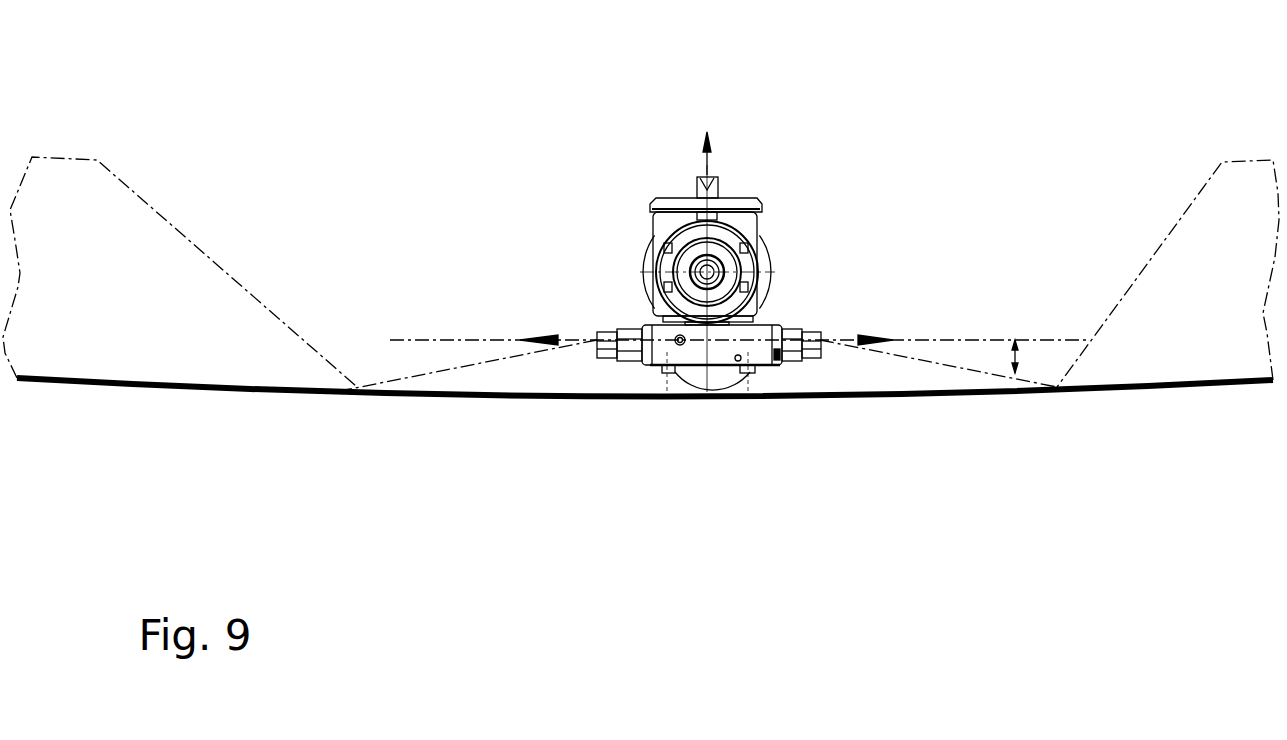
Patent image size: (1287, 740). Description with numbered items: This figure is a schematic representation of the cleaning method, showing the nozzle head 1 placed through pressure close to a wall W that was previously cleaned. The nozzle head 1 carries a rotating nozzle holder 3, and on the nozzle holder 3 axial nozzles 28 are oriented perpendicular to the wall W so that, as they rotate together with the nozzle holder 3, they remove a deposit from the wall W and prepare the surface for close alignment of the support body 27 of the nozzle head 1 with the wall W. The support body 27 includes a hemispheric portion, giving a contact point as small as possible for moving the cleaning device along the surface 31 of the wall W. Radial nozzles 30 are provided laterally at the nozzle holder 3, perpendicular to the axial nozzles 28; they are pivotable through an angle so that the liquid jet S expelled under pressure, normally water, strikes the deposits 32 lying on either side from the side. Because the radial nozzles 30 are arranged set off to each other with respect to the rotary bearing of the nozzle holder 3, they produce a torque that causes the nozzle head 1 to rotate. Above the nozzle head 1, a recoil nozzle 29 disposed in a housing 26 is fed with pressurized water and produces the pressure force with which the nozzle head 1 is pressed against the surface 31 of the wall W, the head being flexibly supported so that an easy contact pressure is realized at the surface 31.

The nozzle head 1 is at (703, 323).
The nozzle holder 3 is at (765, 330).
The housing 26 is at (768, 240).
The support body 27 is at (708, 375).
The axial nozzles 28 is at (662, 368).
The recoil nozzle 29 is at (716, 178).
The radial nozzles 30 is at (597, 350).
The surface 31 is at (438, 393).
The deposits 32 is at (224, 305).
The liquid jet S is at (565, 340).
The wall W is at (227, 396).